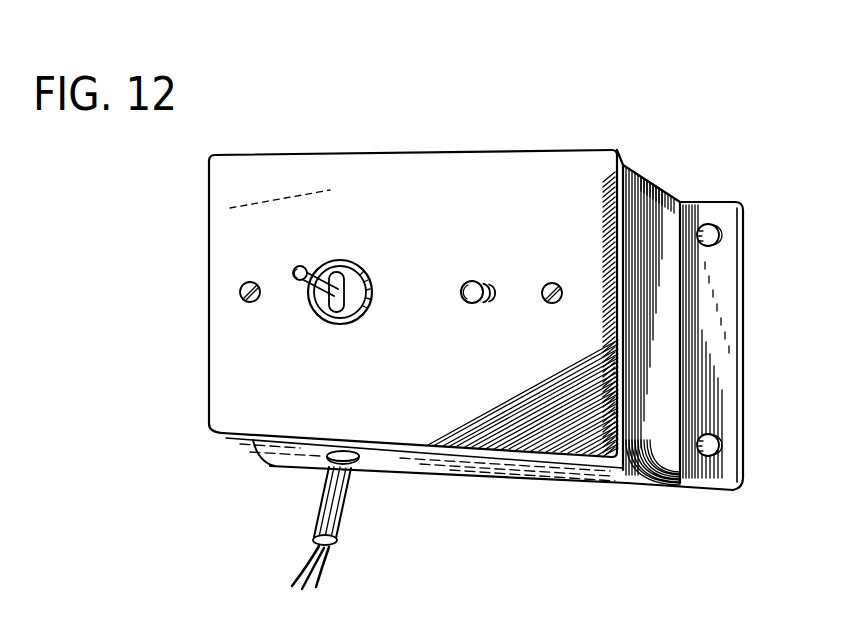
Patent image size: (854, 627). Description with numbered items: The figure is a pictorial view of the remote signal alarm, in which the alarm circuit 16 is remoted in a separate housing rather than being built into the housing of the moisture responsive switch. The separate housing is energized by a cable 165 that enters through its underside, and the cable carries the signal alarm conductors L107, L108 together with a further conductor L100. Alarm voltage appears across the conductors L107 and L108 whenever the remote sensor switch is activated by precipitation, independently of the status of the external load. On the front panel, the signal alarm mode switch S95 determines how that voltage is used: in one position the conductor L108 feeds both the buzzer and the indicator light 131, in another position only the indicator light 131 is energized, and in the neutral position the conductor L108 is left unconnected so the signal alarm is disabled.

The alarm circuit 16 is at (673, 152).
The signal alarm mode switch S95 is at (296, 271).
The indicator light 131 is at (484, 282).
The cable 165 is at (350, 501).
The conductor L107 is at (300, 570).
The conductor L108 is at (323, 567).
The lead wire L100 is at (303, 588).